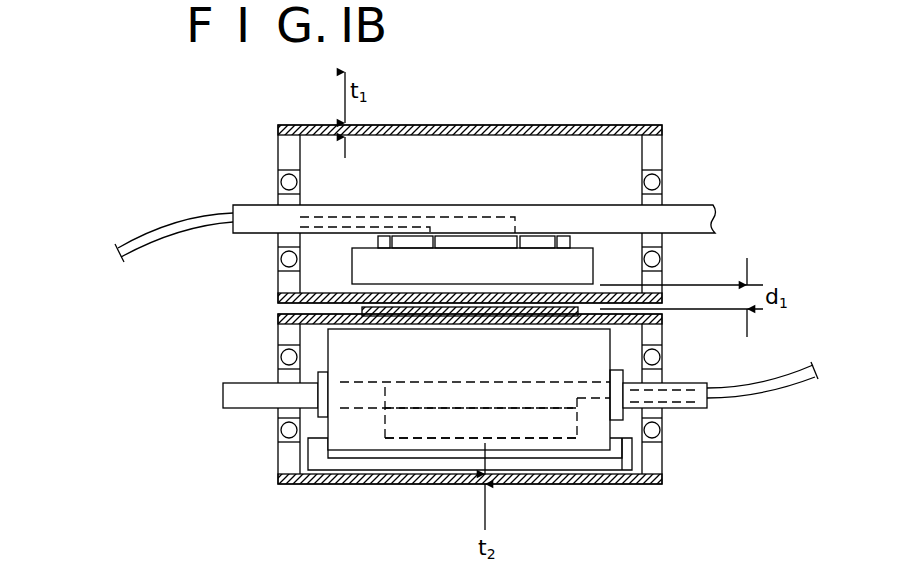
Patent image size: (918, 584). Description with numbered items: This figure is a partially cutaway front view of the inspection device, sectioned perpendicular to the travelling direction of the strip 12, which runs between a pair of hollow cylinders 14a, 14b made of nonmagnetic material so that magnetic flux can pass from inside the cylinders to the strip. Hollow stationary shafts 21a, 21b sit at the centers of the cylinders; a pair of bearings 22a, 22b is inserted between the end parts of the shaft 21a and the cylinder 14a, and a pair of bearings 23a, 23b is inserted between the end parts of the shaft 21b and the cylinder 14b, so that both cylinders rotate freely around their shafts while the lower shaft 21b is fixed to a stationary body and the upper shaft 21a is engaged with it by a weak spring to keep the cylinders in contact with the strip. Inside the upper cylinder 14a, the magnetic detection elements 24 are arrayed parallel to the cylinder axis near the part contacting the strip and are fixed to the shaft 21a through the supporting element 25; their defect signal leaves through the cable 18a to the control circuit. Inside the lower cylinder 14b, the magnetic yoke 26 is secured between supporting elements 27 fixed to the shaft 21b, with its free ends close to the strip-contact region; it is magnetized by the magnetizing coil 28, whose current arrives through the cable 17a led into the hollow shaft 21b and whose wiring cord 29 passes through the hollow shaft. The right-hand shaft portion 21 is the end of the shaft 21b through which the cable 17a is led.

The strip 12 is at (345, 329).
The hollow cylinder 14a is at (473, 126).
The hollow cylinder 14b is at (578, 487).
The cable 17a is at (780, 388).
The cable 18a is at (158, 232).
The shaft 21 is at (687, 383).
The hollow stationary shaft 21a is at (692, 205).
The hollow stationary shaft 21b is at (253, 397).
The bearing 22a is at (278, 160).
The bearing 22b is at (662, 160).
The bearing 23a is at (278, 462).
The bearing 23b is at (662, 455).
The magnetic detection elements 24 is at (590, 284).
The supporting element 25 is at (570, 240).
The magnetic yoke 26 is at (415, 217).
The supporting element 27 is at (320, 377).
The magnetizing coil 28 is at (622, 472).
The wiring cord 29 is at (462, 383).